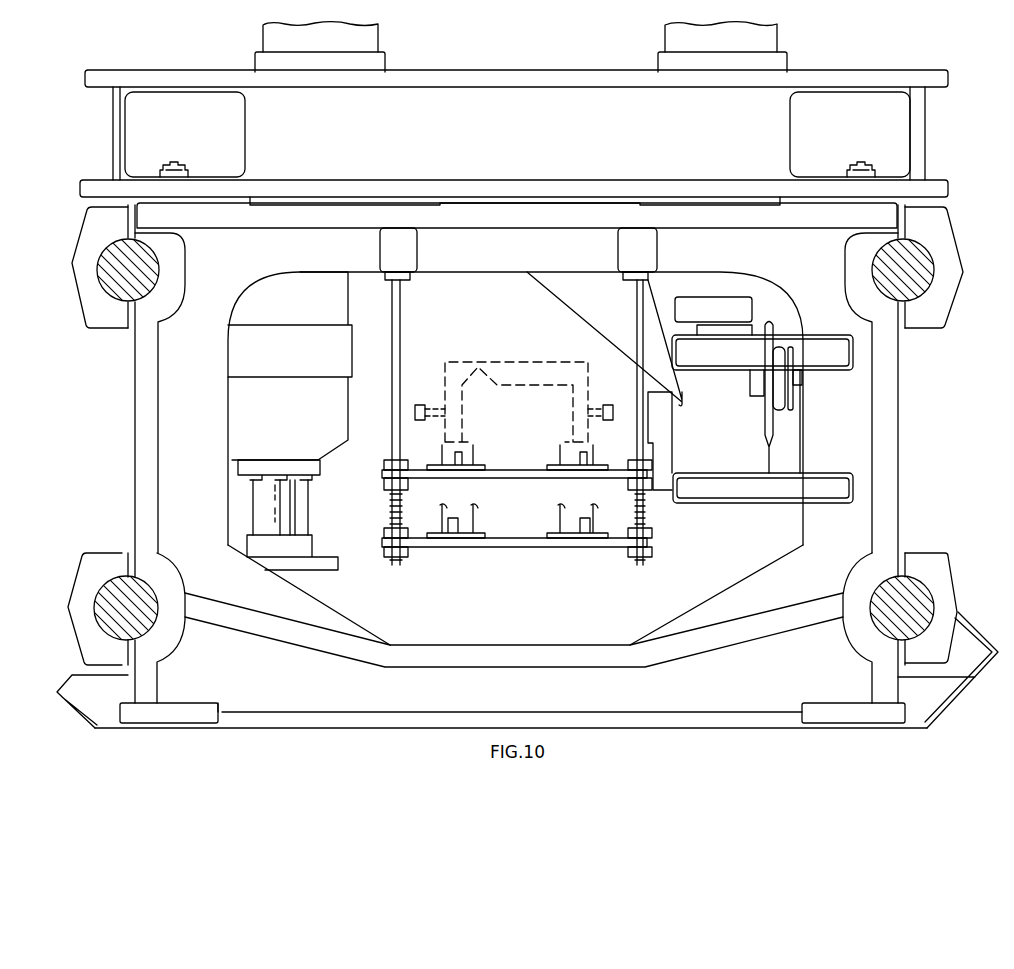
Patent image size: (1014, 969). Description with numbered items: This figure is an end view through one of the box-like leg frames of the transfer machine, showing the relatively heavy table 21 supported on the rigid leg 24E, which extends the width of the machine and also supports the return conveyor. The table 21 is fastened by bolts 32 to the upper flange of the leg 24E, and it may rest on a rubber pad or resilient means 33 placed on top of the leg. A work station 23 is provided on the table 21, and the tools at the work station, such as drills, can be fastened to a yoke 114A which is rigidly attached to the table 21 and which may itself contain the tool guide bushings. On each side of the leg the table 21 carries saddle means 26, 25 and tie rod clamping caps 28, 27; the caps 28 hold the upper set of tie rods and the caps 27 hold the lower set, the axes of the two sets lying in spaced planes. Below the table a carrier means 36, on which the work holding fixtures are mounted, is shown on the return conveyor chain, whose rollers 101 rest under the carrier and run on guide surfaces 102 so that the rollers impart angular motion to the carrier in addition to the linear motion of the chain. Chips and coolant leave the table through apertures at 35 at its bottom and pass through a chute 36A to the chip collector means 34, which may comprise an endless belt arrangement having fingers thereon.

The yoke 114A is at (385, 40).
The table 21 is at (948, 78).
The work station 23 is at (895, 146).
The bolt 32 is at (175, 165).
The rubber pad or resilient means 33 is at (242, 196).
The aperture 35 is at (575, 197).
The saddle means 26 is at (160, 268).
The tie rod clamping cap 28 is at (75, 263).
The leg 24E is at (898, 432).
The chip collector means 34 is at (822, 418).
The carrier means 36 is at (490, 362).
The chute 36A is at (601, 339).
The roller 101 is at (444, 456).
The guide surface 102 is at (455, 478).
The tie rod clamping cap 27 is at (90, 556).
The saddle means 25 is at (150, 585).